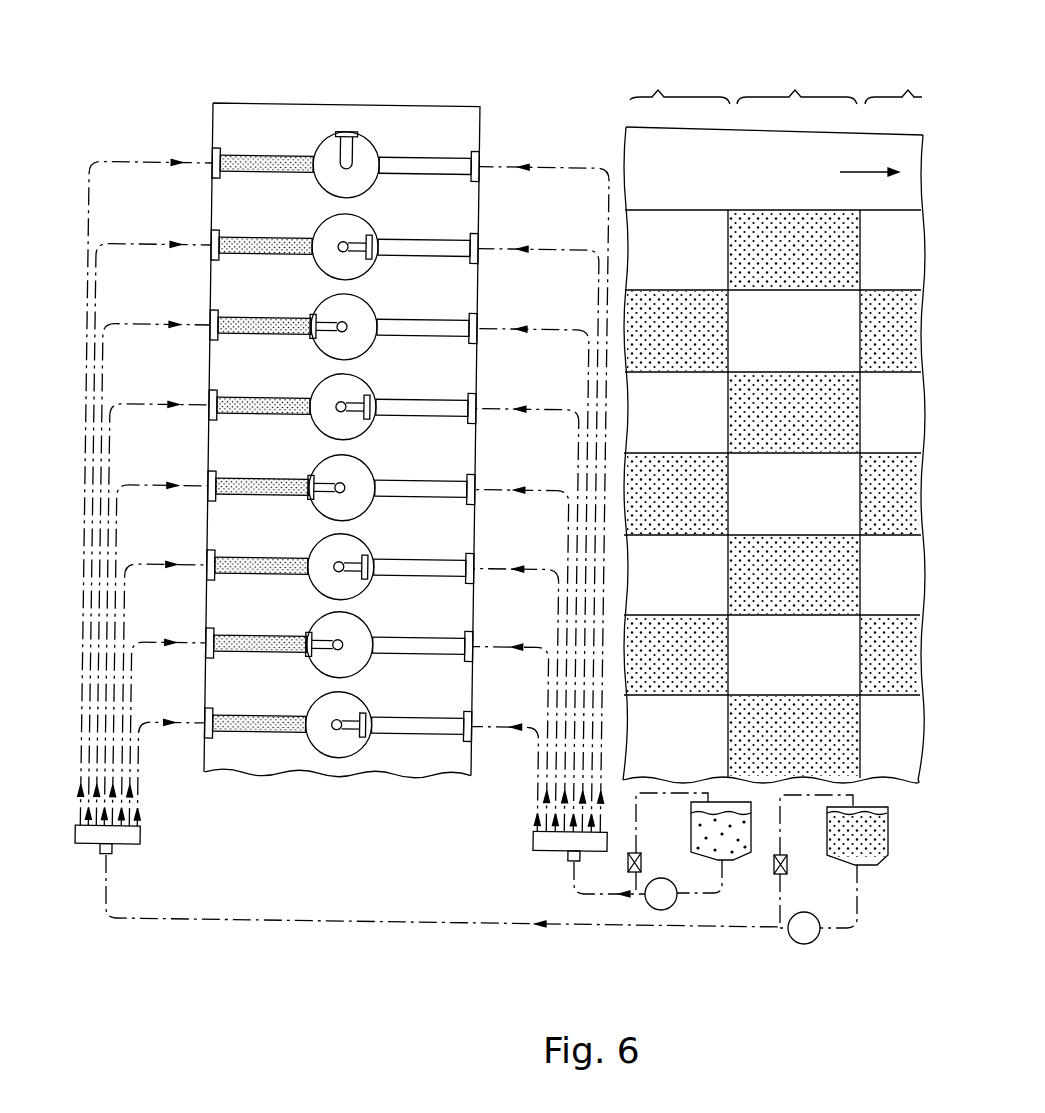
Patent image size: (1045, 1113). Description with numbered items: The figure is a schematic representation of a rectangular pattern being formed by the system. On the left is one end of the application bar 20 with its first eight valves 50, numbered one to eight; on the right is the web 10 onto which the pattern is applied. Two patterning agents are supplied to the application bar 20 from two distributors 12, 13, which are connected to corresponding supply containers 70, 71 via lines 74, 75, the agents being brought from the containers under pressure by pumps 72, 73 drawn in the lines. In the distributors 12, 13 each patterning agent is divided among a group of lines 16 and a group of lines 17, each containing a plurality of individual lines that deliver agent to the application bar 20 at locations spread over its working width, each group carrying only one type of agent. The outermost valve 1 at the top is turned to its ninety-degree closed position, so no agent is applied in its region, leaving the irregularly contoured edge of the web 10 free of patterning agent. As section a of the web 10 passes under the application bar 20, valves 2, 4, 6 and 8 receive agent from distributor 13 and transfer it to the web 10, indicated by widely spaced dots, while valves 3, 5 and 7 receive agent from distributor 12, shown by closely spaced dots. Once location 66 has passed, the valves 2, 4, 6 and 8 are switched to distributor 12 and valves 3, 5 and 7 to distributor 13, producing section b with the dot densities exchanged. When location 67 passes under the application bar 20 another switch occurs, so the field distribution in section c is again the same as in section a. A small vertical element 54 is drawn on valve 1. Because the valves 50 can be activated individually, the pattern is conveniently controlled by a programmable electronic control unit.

The application bar 20 is at (210, 128).
The vertical pipe 54 is at (353, 162).
The valve 50 is at (320, 227).
The outermost valve I 1 is at (346, 159).
The valve II 2 is at (345, 249).
The valve III 3 is at (344, 329).
The valve IV 4 is at (342, 409).
The valve V 5 is at (341, 490).
The valve VI 6 is at (340, 569).
The valve VII 7 is at (339, 647).
The valve VIII 8 is at (338, 727).
The group of lines 16 is at (145, 773).
The group of lines 17 is at (552, 765).
The distributor 12 is at (150, 838).
The distributor 13 is at (543, 839).
The web 10 is at (779, 173).
The location 67 is at (730, 92).
The location 66 is at (863, 92).
The supply container 70 is at (880, 862).
The supply container 71 is at (736, 860).
The pump 72 is at (803, 912).
The pump 73 is at (662, 878).
The line 74 is at (358, 922).
The line 75 is at (568, 878).
The section a is at (893, 85).
The section b is at (794, 77).
The section c is at (657, 77).